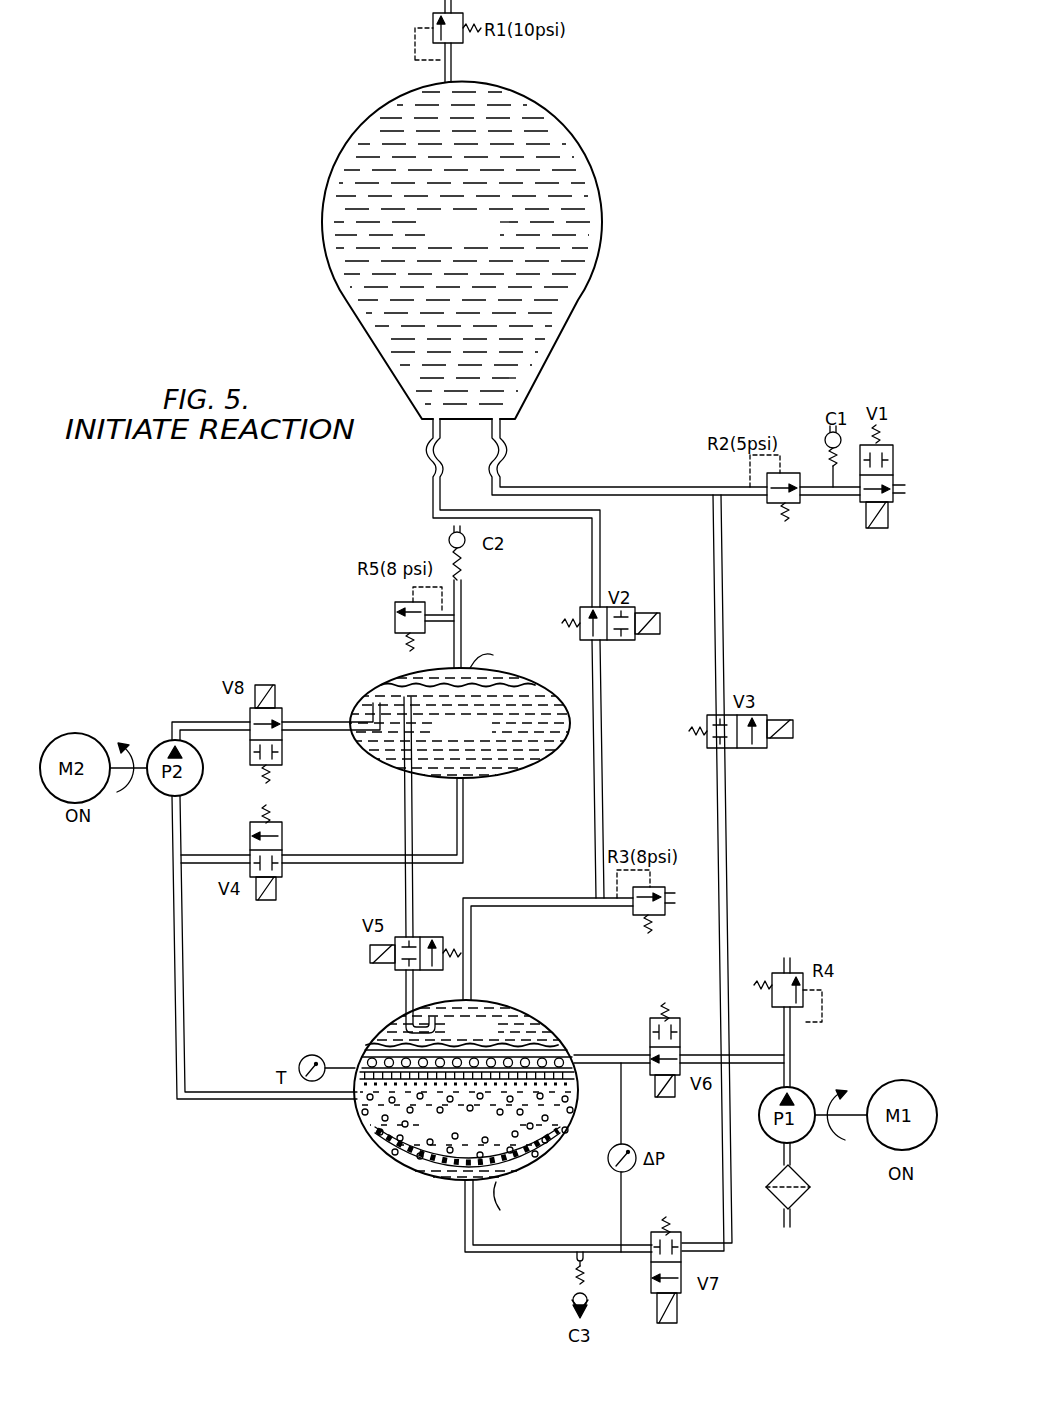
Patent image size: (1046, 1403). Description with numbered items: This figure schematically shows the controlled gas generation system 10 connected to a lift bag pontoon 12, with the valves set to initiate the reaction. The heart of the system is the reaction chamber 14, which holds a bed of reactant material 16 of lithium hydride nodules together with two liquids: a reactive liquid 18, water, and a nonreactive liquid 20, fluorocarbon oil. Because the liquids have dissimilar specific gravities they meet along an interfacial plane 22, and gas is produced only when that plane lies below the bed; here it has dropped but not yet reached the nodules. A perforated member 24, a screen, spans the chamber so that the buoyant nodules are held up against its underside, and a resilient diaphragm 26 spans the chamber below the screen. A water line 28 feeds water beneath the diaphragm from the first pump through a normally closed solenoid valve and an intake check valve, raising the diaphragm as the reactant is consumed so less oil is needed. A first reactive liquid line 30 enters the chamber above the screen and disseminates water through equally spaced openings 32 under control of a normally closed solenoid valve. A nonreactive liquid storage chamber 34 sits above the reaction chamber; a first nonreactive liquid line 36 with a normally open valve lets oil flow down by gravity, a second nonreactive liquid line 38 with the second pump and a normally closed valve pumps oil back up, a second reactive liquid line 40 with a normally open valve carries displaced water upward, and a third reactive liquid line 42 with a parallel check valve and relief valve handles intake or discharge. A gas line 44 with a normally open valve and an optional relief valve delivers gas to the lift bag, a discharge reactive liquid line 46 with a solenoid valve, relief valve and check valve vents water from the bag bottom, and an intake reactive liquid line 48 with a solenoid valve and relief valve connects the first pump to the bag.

The controlled gas generation system 10 is at (124, 667).
The lift bag pontoon 12 is at (758, 176).
The reaction chamber 14 is at (357, 1135).
The bed of reactant material 16 is at (357, 1116).
The reactive liquid 18 is at (378, 1026).
The nonreactive liquid 20 is at (357, 1102).
The interfacial plane 22 is at (362, 1046).
The perforated member 24 is at (357, 1082).
The resilient diaphragm 26 is at (395, 1162).
The water line 28 is at (472, 1260).
The first reactive liquid line 30 is at (583, 1058).
The openings 32 is at (524, 1046).
The nonreactive liquid storage chamber 34 is at (373, 690).
The first nonreactive liquid line 36 is at (290, 857).
The second nonreactive liquid line 38 is at (210, 722).
The second reactive liquid line 40 is at (405, 812).
The third reactive liquid line 42 is at (462, 627).
The gas line 44 is at (604, 708).
The discharge reactive liquid line 46 is at (589, 487).
The intake reactive liquid line 48 is at (724, 595).